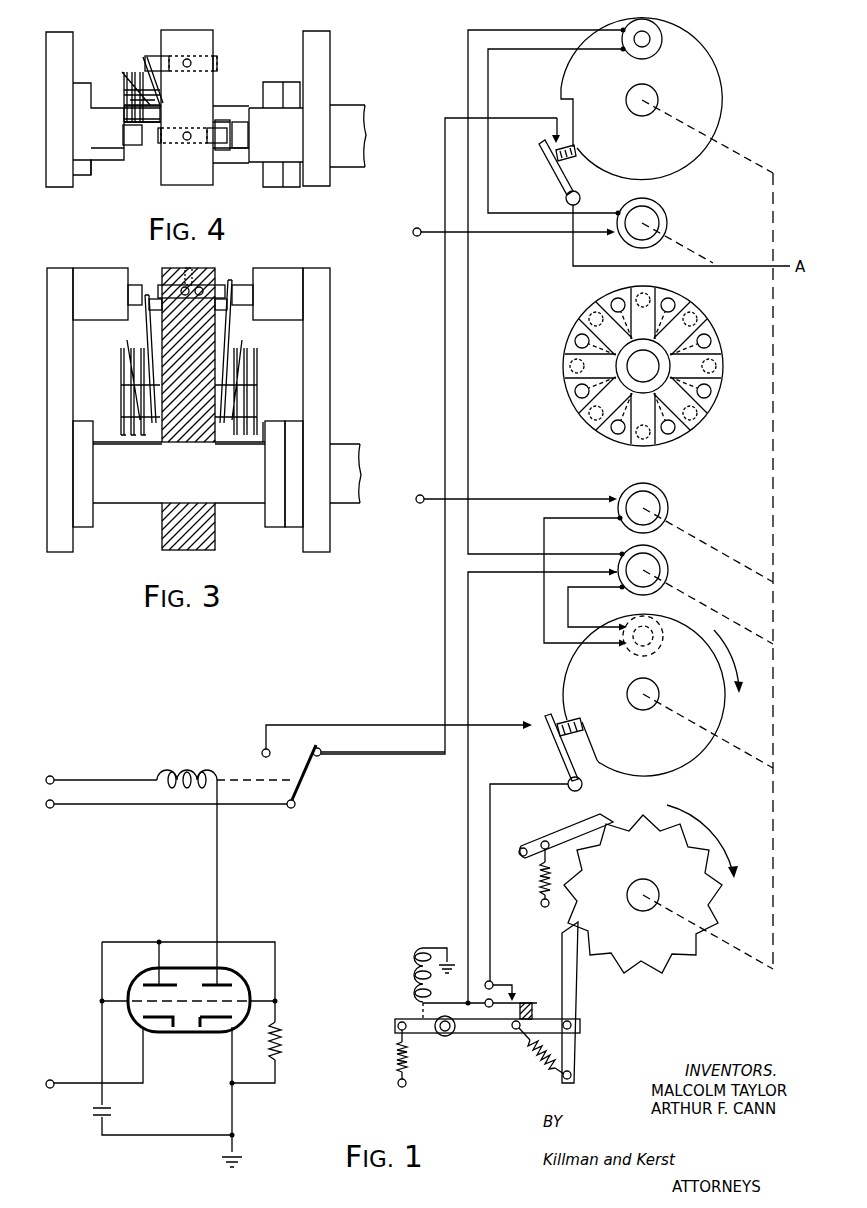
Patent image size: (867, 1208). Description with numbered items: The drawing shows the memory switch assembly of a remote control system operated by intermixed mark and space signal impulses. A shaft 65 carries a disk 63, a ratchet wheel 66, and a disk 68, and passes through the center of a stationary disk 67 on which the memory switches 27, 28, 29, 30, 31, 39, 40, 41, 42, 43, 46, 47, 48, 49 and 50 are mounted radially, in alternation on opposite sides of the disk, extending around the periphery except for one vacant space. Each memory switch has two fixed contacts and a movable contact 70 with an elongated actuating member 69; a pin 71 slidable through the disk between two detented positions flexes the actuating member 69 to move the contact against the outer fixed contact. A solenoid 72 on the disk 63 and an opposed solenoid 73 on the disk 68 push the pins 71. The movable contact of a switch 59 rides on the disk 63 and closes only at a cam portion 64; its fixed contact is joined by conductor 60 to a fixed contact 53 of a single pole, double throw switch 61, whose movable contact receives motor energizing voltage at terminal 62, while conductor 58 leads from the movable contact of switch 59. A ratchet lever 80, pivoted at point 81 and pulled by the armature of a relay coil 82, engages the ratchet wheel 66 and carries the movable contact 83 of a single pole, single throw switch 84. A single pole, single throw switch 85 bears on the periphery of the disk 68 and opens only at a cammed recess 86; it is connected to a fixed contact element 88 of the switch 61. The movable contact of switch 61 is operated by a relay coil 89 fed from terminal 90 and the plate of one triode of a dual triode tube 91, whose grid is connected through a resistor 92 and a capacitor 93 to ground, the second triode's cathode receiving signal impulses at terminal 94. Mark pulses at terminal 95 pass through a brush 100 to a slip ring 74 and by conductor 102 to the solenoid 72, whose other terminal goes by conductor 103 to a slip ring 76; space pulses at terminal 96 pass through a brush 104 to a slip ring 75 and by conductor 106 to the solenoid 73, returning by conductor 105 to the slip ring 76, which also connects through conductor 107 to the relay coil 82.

In FIG. 4, the memory switch 27 is at (233, 120).
In FIG. 3, the memory switch 27 is at (252, 377).
In FIG. 1, the memory switch 27 is at (649, 294).
In FIG. 4, the memory switch 28 is at (131, 70).
In FIG. 3, the memory switch 28 is at (124, 377).
In FIG. 1, the memory switch 28 is at (675, 302).
In FIG. 1, the memory switch 29 is at (698, 316).
In FIG. 1, the memory switch 30 is at (715, 339).
In FIG. 1, the memory switch 31 is at (720, 366).
In FIG. 1, the memory switch 39 is at (714, 394).
In FIG. 1, the memory switch 40 is at (697, 419).
In FIG. 1, the memory switch 41 is at (673, 436).
In FIG. 1, the memory switch 42 is at (643, 442).
In FIG. 1, the memory switch 43 is at (616, 436).
In FIG. 1, the memory switch 46 is at (591, 420).
In FIG. 1, the memory switch 47 is at (575, 396).
In FIG. 1, the memory switch 48 is at (568, 366).
In FIG. 1, the memory switch 49 is at (574, 338).
In FIG. 1, the memory switch 50 is at (590, 312).
In FIG. 1, the fixed contact 53 is at (322, 756).
In FIG. 1, the conductor 58 is at (729, 268).
In FIG. 1, the switch 59 is at (547, 166).
In FIG. 1, the conductor 60 is at (444, 377).
In FIG. 1, the single pole, double throw switch 61 is at (306, 760).
In FIG. 1, the terminal 62 is at (46, 805).
In FIG. 4, the disk 63 is at (48, 38).
In FIG. 3, the disk 63 is at (50, 272).
In FIG. 1, the disk 63 is at (710, 72).
In FIG. 1, the cam portion 64 is at (576, 117).
In FIG. 4, the shaft 65 is at (353, 160).
In FIG. 3, the shaft 65 is at (238, 500).
In FIG. 1, the shaft 65 is at (775, 455).
In FIG. 1, the ratchet wheel 66 is at (665, 965).
In FIG. 4, the stationary disk 67 is at (206, 38).
In FIG. 3, the stationary disk 67 is at (192, 274).
In FIG. 1, the stationary disk 67 is at (605, 296).
In FIG. 3, the disk 68 is at (329, 353).
In FIG. 1, the disk 68 is at (723, 714).
In FIG. 3, the actuating member 69 is at (149, 305).
In FIG. 3, the movable contact 70 is at (140, 340).
In FIG. 4, the pin 71 is at (217, 63).
In FIG. 3, the pin 71 is at (226, 290).
In FIG. 4, the solenoid 72 is at (102, 166).
In FIG. 3, the solenoid 72 is at (114, 280).
In FIG. 1, the solenoid 72 is at (652, 28).
In FIG. 4, the solenoid 73 is at (258, 156).
In FIG. 3, the solenoid 73 is at (280, 274).
In FIG. 1, the solenoid 73 is at (666, 641).
In FIG. 4, the slip ring 74 is at (84, 178).
In FIG. 3, the slip ring 74 is at (86, 521).
In FIG. 1, the slip ring 74 is at (668, 222).
In FIG. 3, the slip ring 75 is at (270, 521).
In FIG. 1, the slip ring 75 is at (668, 506).
In FIG. 3, the slip ring 76 is at (292, 522).
In FIG. 1, the slip ring 76 is at (668, 568).
In FIG. 1, the ratchet lever 80 is at (491, 1034).
In FIG. 1, the pivot point 81 is at (446, 1038).
In FIG. 1, the relay coil 82 is at (413, 978).
In FIG. 1, the movable contact 83 is at (527, 1002).
In FIG. 1, the single pole, single throw switch 84 is at (494, 985).
In FIG. 1, the single pole, single throw switch 85 is at (557, 752).
In FIG. 1, the cammed recess 86 is at (585, 735).
In FIG. 1, the fixed contact element 88 is at (262, 752).
In FIG. 1, the relay coil 89 is at (183, 769).
In FIG. 1, the terminal 90 is at (46, 781).
In FIG. 1, the dual triode tube 91 is at (237, 972).
In FIG. 1, the resistor 92 is at (278, 1034).
In FIG. 1, the capacitor 93 is at (112, 1109).
In FIG. 1, the terminal 94 is at (50, 1089).
In FIG. 1, the terminal 95 is at (504, 241).
In FIG. 1, the terminal 96 is at (505, 506).
In FIG. 1, the brush 100 is at (617, 236).
In FIG. 1, the conductor 102 is at (490, 72).
In FIG. 1, the conductor 103 is at (470, 433).
In FIG. 1, the brush 104 is at (612, 498).
In FIG. 1, the conductor 105 is at (570, 608).
In FIG. 1, the conductor 106 is at (543, 608).
In FIG. 1, the conductor 107 is at (470, 670).